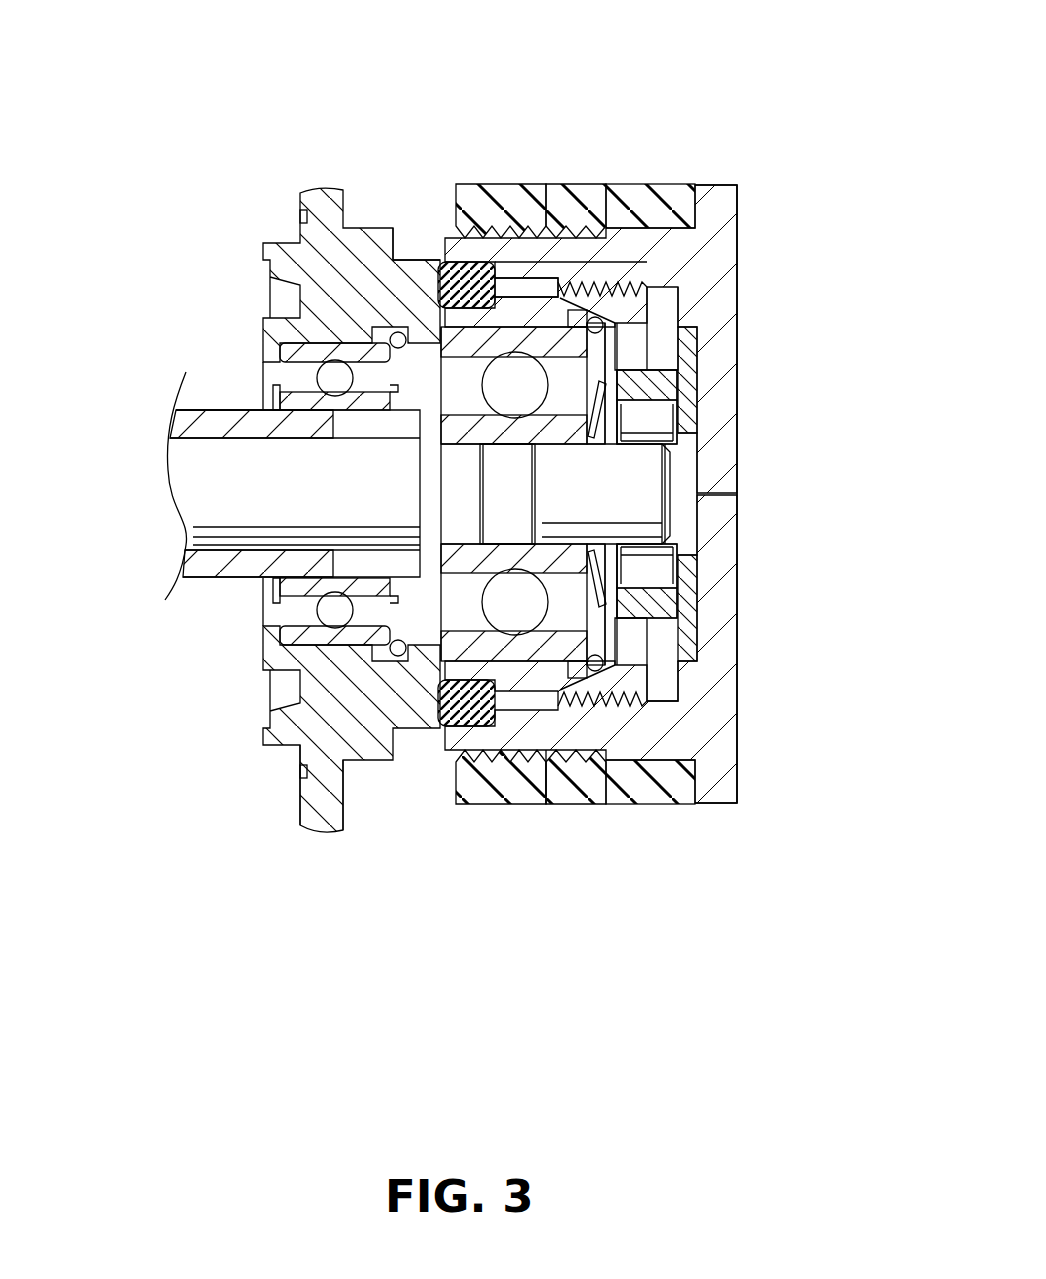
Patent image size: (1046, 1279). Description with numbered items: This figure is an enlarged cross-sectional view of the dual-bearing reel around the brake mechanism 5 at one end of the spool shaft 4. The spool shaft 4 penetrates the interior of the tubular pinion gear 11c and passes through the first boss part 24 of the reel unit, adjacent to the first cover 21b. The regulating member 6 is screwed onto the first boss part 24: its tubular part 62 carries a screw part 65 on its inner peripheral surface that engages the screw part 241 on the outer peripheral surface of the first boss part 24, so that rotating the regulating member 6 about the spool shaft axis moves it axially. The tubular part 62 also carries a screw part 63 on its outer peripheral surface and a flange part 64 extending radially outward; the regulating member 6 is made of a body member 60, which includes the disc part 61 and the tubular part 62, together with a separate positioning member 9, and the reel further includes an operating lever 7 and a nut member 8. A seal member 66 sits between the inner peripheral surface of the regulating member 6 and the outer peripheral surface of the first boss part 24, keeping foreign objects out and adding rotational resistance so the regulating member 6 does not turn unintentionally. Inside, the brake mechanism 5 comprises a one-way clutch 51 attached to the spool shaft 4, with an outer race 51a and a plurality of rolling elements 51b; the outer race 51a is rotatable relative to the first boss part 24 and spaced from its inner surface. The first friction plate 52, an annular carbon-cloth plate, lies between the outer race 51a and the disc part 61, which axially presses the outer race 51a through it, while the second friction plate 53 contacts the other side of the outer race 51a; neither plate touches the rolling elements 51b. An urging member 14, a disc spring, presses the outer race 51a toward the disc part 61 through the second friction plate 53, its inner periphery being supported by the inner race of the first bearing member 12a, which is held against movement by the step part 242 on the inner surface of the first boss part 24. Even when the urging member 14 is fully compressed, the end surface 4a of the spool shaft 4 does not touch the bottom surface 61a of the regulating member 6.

The spool shaft 4 is at (193, 483).
The end surface 4a is at (697, 483).
The brake mechanism 5 is at (658, 315).
The regulating member 6 is at (765, 183).
The operating lever 7 is at (680, 797).
The nut member 8 is at (517, 795).
The positioning member 9 is at (588, 797).
The pinion gear 11c is at (220, 410).
The first bearing member 12a is at (545, 770).
The urging member 14 is at (603, 697).
The first cover 21b is at (302, 792).
The first boss part 24 is at (415, 736).
The one-way clutch 51 is at (660, 367).
The outer race 51a is at (663, 610).
The rolling elements 51b is at (655, 558).
The first friction plate 52 is at (687, 595).
The second friction plate 53 is at (613, 633).
The body member 60 is at (741, 360).
The disc part 61 is at (737, 390).
The bottom surface 61a is at (697, 460).
The tubular part 62 is at (600, 226).
The screw part 63 is at (530, 267).
The flange part 64 is at (717, 185).
The screw part 65 is at (580, 283).
The seal member 66 is at (440, 268).
The screw part 241 is at (508, 250).
The step part 242 is at (448, 722).